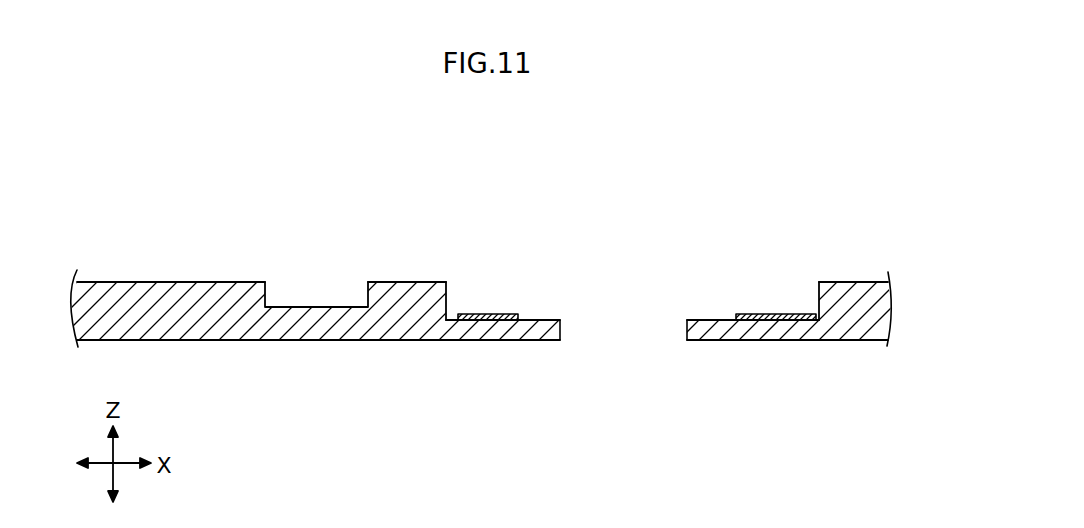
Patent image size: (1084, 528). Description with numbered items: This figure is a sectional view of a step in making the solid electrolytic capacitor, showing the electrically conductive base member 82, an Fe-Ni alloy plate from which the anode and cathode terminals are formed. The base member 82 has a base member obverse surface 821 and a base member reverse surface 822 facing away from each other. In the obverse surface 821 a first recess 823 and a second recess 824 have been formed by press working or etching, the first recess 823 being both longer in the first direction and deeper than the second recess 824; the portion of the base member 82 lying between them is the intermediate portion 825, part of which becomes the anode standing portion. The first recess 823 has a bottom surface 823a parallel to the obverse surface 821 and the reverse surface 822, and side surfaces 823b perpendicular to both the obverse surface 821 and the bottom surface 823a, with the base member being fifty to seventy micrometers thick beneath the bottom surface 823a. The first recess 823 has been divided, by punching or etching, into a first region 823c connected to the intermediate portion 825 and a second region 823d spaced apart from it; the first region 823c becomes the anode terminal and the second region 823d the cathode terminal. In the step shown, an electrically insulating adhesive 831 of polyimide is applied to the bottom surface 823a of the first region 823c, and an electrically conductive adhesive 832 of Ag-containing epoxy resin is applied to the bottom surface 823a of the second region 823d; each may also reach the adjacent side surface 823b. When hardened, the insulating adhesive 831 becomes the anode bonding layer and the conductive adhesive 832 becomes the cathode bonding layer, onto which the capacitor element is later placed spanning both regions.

The electrically conductive base member 82 is at (127, 220).
The base member obverse surface 821 is at (203, 281).
The base member reverse surface 822 is at (193, 341).
The first recess 823 is at (665, 282).
The bottom surface 823a is at (543, 320).
The side surface 823b is at (448, 298).
The first region 823c is at (463, 205).
The second region 823d is at (697, 205).
The second recess 824 is at (320, 288).
The intermediate portion 825 is at (408, 305).
The electrically insulating adhesive 831 is at (487, 322).
The electrically conductive adhesive 832 is at (757, 322).